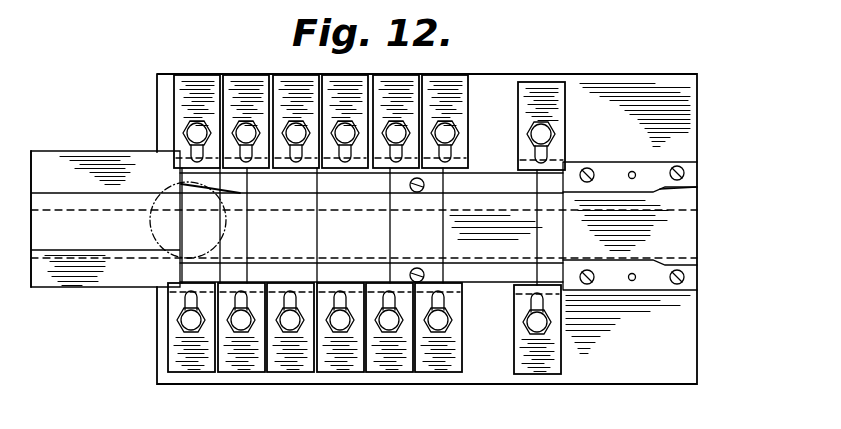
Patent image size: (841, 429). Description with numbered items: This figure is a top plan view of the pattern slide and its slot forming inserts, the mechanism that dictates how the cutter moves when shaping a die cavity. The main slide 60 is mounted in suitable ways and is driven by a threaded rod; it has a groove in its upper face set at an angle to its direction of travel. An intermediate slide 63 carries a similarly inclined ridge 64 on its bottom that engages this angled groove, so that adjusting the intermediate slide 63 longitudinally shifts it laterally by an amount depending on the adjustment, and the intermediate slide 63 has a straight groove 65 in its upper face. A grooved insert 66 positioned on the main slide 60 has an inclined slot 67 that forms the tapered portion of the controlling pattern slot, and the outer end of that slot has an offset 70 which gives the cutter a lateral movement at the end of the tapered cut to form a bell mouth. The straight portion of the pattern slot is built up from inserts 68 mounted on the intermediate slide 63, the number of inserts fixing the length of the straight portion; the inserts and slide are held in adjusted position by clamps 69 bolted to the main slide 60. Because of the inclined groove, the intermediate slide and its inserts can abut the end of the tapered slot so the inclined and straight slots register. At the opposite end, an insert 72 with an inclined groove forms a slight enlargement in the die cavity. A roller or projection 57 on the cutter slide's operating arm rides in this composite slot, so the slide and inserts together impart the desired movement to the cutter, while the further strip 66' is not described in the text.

The roller or projection 57 is at (157, 218).
The main slide 60 is at (157, 346).
The intermediate slide 63 is at (118, 152).
The inclined ridge 64 is at (50, 258).
The straight groove 65 is at (48, 200).
The grooved insert 66 is at (630, 211).
The upper guide strip 66' is at (371, 152).
The inclined slot 67 is at (578, 193).
The inserts 68 is at (283, 268).
The clamps 69 is at (548, 113).
The offset 70 is at (695, 191).
The insert 72 is at (180, 187).